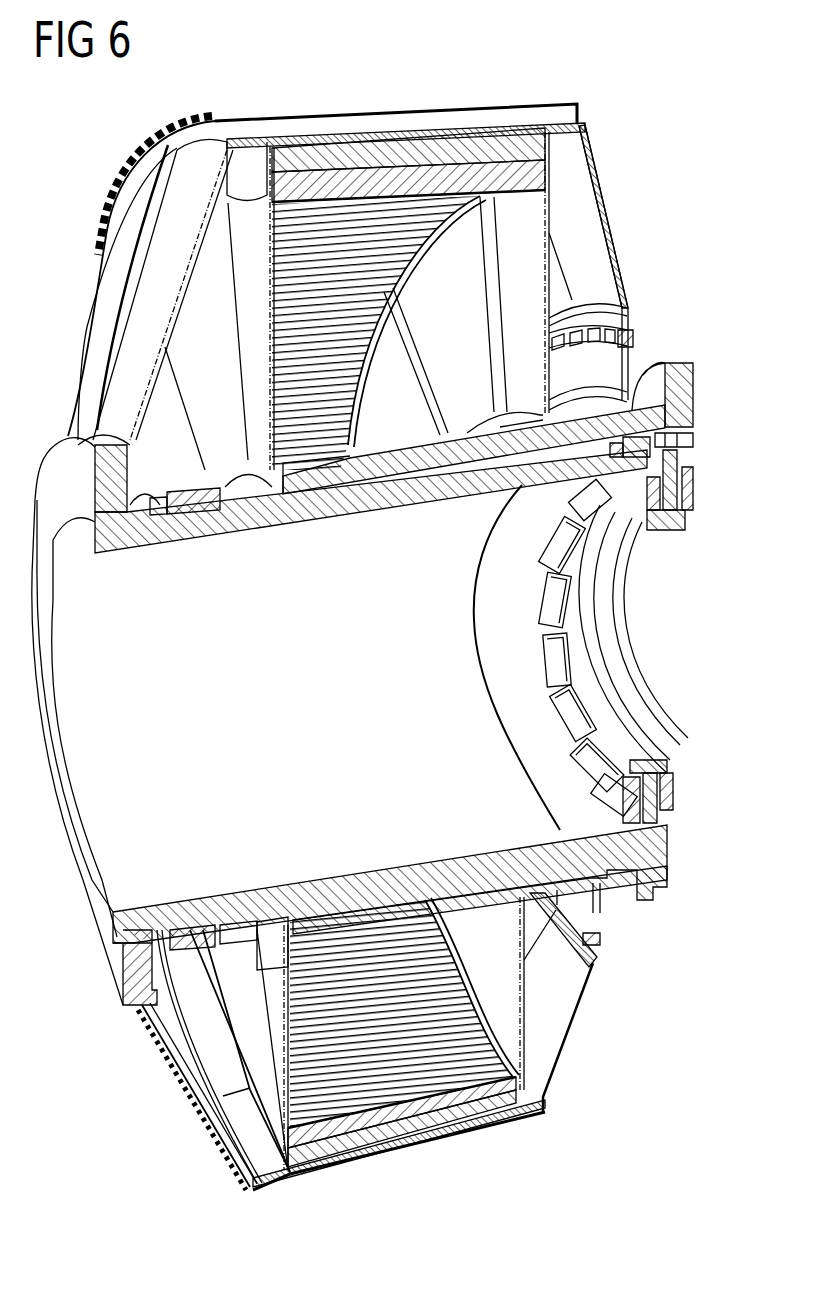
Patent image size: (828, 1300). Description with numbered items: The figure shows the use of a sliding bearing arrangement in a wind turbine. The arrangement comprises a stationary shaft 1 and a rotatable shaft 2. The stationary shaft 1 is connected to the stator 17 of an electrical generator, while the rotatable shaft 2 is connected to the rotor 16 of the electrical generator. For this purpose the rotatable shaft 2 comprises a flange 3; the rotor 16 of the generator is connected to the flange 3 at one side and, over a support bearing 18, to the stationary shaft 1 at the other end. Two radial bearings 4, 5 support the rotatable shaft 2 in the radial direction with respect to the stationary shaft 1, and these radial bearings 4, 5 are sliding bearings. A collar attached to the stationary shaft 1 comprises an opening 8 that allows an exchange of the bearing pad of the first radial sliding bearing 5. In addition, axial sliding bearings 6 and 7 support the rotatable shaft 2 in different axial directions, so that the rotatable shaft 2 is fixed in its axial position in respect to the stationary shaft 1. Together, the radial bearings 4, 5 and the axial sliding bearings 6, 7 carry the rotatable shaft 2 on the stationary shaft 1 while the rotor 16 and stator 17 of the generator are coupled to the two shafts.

The stationary shaft 1 is at (678, 376).
The rotatable shaft 2 is at (138, 535).
The flange 3 is at (97, 484).
The radial bearing 4 is at (190, 496).
The first radial sliding bearing 5 is at (643, 445).
The axial sliding bearing 6 is at (645, 497).
The axial sliding bearing 7 is at (688, 500).
The opening 8 is at (688, 440).
The rotor 16 is at (555, 127).
The stator 17 is at (483, 150).
The support bearing 18 is at (626, 337).